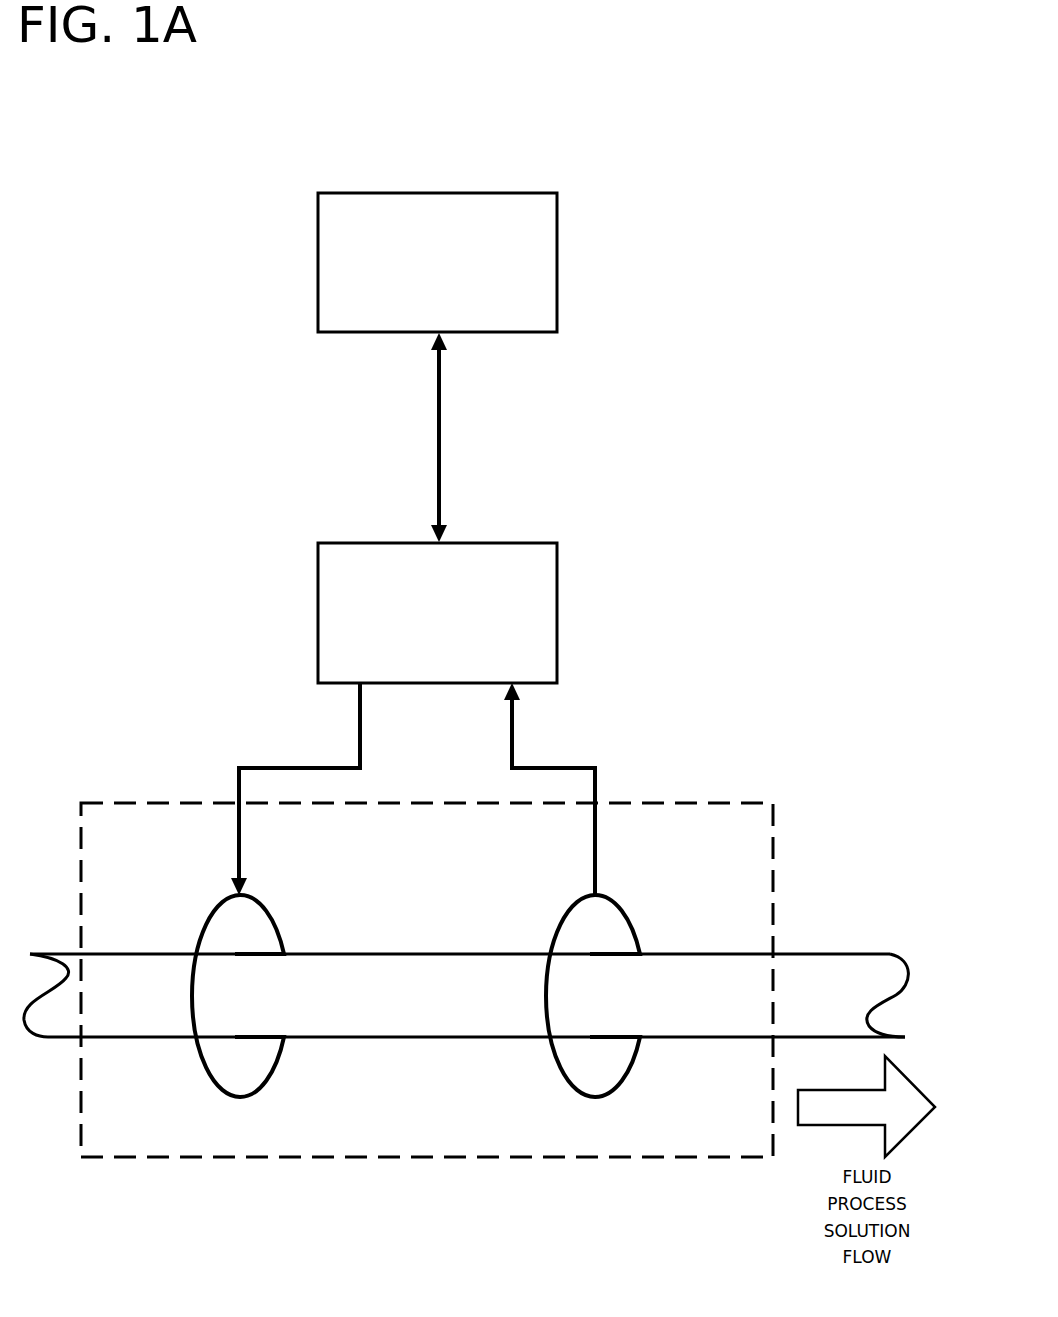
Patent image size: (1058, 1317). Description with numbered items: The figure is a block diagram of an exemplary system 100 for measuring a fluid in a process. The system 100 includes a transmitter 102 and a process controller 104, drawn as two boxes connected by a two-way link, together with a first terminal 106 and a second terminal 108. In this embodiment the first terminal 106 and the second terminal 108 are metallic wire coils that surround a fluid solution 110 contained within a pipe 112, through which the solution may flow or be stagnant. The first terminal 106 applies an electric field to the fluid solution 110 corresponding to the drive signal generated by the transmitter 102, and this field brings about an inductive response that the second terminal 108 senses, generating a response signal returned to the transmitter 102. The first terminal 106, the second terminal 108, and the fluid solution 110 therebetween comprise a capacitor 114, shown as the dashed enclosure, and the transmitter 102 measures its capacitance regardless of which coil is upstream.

The system 100 is at (543, 78).
The transmitter 102 is at (421, 636).
The process controller 104 is at (421, 286).
The first terminal 106 is at (205, 920).
The second terminal 108 is at (625, 915).
The fluid solution 110 is at (369, 995).
The pipe 112 is at (393, 1037).
The capacitor 114 is at (696, 803).